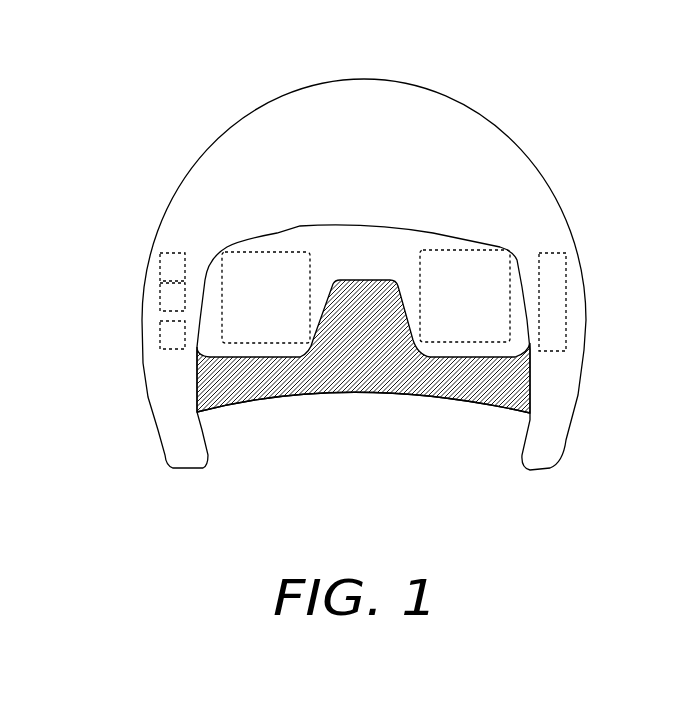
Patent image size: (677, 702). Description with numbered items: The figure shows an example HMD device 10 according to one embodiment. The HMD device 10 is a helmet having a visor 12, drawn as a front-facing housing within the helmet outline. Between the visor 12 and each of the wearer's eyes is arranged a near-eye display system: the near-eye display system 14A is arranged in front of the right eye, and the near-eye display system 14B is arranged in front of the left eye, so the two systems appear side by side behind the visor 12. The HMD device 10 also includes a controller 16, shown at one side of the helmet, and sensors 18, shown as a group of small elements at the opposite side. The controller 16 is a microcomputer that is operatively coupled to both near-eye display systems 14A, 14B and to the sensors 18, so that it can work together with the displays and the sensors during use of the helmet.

The HMD device 10 is at (556, 122).
The visor 12 is at (268, 230).
The near-eye display system 14A is at (266, 297).
The near-eye display system 14B is at (465, 296).
The controller 16 is at (566, 298).
The sensors 18 is at (132, 255).